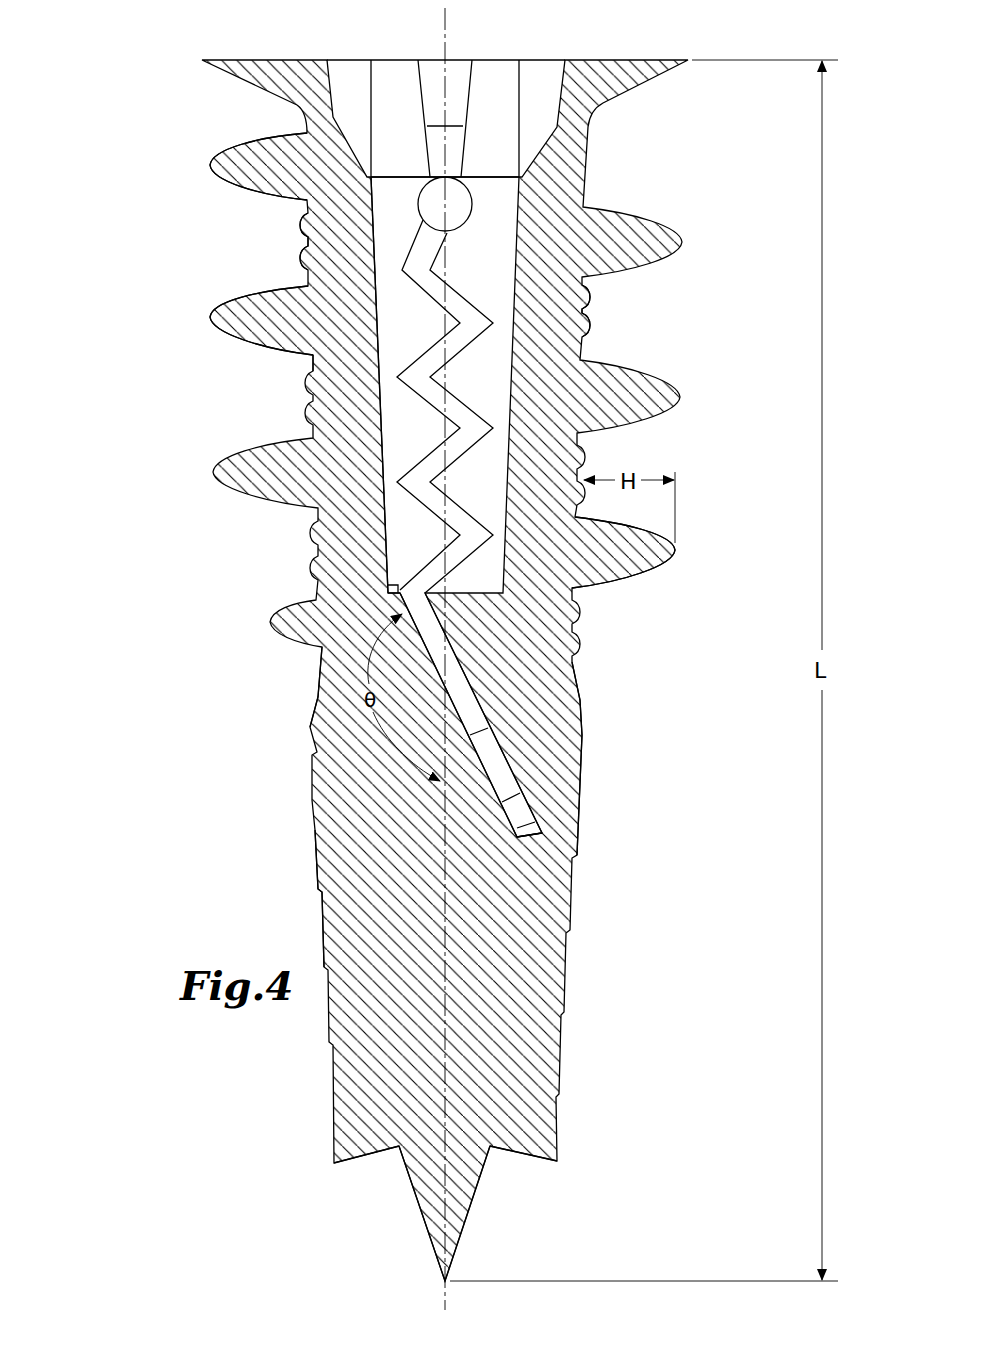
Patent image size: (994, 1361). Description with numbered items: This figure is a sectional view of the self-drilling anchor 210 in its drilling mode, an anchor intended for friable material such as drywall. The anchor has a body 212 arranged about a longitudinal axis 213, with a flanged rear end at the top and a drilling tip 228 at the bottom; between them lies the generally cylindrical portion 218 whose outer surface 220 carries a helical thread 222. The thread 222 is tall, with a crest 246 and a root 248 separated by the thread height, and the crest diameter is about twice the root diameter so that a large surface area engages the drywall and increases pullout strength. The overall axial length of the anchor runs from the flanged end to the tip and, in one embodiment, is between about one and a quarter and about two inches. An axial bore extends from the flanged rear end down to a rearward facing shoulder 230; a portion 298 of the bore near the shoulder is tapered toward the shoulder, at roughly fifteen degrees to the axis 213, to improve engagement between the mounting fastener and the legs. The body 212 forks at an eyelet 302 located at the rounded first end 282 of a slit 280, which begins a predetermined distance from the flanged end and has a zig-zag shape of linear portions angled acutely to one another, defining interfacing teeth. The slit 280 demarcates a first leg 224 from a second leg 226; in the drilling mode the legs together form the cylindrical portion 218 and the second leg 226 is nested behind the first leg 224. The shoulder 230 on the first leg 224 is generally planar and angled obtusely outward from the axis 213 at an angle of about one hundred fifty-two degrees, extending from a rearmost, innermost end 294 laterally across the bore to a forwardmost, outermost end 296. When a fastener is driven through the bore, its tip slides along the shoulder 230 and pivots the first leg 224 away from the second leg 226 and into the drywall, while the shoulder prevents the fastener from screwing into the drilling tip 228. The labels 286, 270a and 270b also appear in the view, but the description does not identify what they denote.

The self-drilling anchor 210 is at (138, 127).
The axis 213 is at (447, 25).
The first end of slit 282 is at (413, 177).
The eyelet 302 is at (455, 198).
The thread 222 is at (208, 165).
The generally cylindrical portion 218 is at (296, 271).
The crest 246 is at (210, 317).
The body 212 is at (601, 318).
The root 248 is at (313, 363).
The slit 280 is at (467, 428).
The tapered portion of bore 298 is at (380, 429).
The rearmost and innermost end of shoulder 294 is at (398, 592).
The second leg 226 is at (534, 614).
The first leg 224 is at (356, 663).
The shoulder 230 is at (500, 700).
The insert in channel 286 is at (500, 700).
The outer surface 220 is at (582, 735).
The forwardmost and outermost end of shoulder 296 is at (542, 834).
The drilling tip 228 is at (308, 856).
The distal shoulder 270a is at (334, 1163).
The distal tip 270b is at (445, 1281).